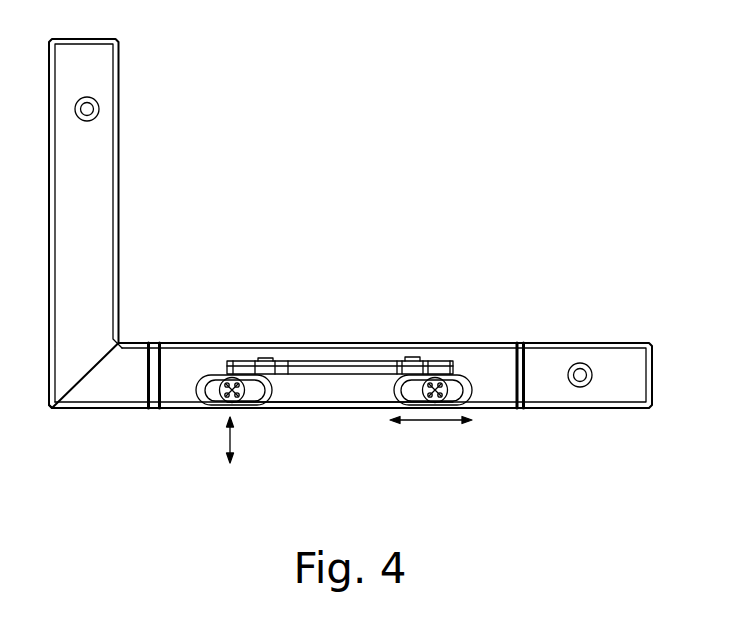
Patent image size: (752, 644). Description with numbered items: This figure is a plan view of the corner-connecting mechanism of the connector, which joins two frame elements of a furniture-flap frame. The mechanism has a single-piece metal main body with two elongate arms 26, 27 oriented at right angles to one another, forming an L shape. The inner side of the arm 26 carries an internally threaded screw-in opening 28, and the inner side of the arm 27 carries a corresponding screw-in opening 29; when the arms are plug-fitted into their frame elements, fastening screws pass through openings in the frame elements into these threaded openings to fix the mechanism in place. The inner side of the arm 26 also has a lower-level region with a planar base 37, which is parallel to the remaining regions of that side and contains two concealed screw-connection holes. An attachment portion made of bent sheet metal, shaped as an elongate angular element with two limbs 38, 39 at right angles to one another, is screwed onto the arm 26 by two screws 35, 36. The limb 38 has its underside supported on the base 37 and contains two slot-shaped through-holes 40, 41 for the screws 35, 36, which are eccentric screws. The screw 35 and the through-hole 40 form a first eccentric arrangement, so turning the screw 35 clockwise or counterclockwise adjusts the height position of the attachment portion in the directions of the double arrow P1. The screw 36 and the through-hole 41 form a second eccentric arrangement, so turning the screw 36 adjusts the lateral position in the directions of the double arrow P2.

The arm 26 is at (487, 409).
The arm 27 is at (119, 212).
The screw-in opening 28 is at (579, 388).
The screw-in opening 29 is at (100, 110).
The screw 35 is at (427, 378).
The screw 36 is at (226, 378).
The planar base 37 is at (503, 359).
The limb 38 is at (332, 402).
The limb 39 is at (333, 361).
The through-hole 40 is at (455, 376).
The through-hole 41 is at (247, 406).
The double arrow P1 is at (430, 424).
The double arrow P2 is at (226, 436).